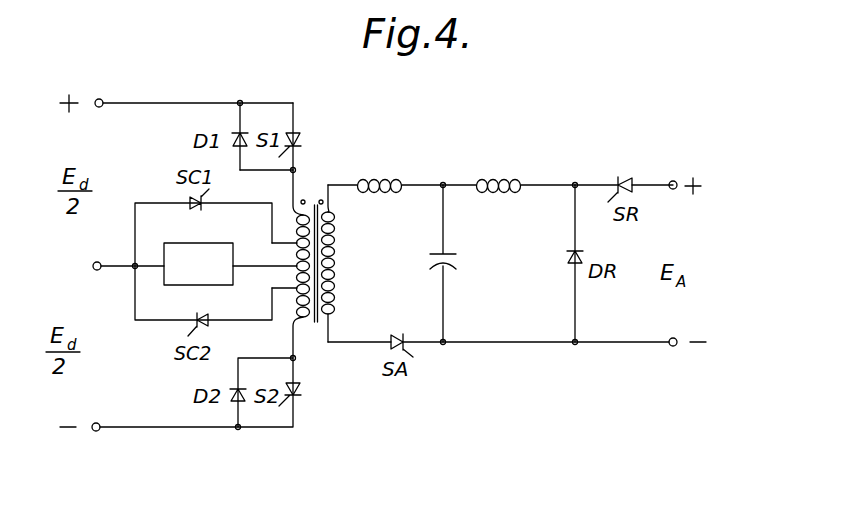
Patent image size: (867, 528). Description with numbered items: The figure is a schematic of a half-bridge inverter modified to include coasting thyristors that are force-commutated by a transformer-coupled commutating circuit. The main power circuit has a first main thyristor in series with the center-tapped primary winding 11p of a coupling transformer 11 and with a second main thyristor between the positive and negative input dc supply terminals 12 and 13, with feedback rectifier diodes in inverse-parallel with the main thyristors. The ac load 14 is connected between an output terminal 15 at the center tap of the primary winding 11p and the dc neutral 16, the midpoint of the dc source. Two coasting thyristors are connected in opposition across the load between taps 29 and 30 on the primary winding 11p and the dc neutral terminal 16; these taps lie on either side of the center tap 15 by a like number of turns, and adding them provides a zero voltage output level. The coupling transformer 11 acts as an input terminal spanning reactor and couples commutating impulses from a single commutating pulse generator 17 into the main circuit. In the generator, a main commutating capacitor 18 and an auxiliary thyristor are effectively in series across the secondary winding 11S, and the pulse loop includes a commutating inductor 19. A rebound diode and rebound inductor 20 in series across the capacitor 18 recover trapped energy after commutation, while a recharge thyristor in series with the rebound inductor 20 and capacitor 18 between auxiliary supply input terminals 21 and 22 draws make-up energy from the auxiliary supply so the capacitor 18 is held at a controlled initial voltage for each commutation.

The coupling transformer 11 is at (316, 191).
The primary winding 11p is at (285, 220).
The secondary winding 11S is at (337, 264).
The positive input dc supply terminal 12 is at (101, 99).
The negative input dc supply terminal 13 is at (95, 432).
The ac load 14 is at (180, 244).
The output terminal 15 is at (288, 268).
The dc neutral 16 is at (97, 271).
The commutating pulse generator 17 is at (447, 168).
The main commutating capacitor 18 is at (426, 262).
The commutating inductor 19 is at (384, 180).
The rebound inductor 20 is at (510, 178).
The auxiliary supply input terminal 21 is at (673, 181).
The auxiliary supply input terminal 22 is at (670, 347).
The tap 29 is at (270, 243).
The tap 30 is at (297, 292).